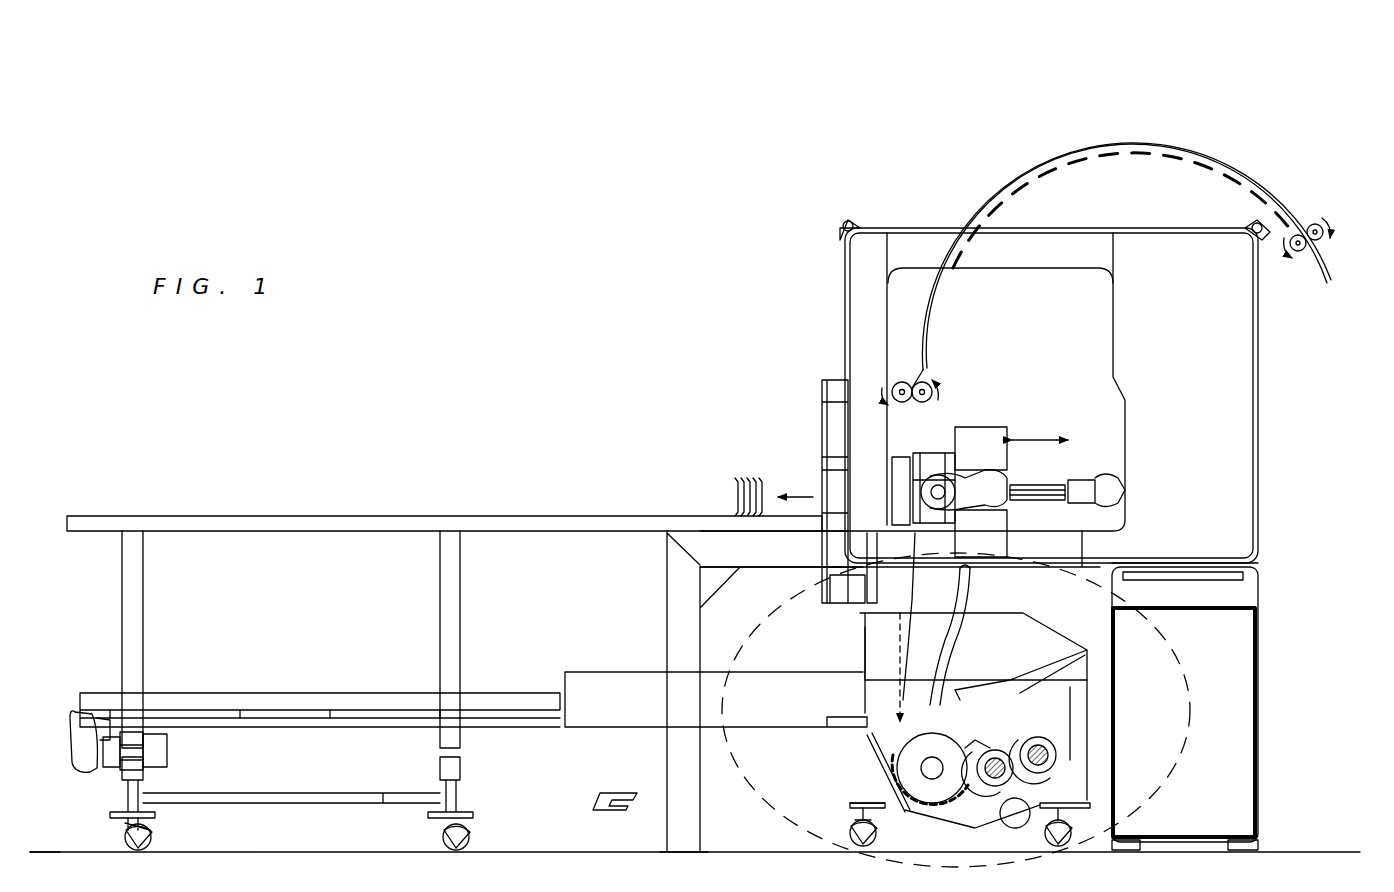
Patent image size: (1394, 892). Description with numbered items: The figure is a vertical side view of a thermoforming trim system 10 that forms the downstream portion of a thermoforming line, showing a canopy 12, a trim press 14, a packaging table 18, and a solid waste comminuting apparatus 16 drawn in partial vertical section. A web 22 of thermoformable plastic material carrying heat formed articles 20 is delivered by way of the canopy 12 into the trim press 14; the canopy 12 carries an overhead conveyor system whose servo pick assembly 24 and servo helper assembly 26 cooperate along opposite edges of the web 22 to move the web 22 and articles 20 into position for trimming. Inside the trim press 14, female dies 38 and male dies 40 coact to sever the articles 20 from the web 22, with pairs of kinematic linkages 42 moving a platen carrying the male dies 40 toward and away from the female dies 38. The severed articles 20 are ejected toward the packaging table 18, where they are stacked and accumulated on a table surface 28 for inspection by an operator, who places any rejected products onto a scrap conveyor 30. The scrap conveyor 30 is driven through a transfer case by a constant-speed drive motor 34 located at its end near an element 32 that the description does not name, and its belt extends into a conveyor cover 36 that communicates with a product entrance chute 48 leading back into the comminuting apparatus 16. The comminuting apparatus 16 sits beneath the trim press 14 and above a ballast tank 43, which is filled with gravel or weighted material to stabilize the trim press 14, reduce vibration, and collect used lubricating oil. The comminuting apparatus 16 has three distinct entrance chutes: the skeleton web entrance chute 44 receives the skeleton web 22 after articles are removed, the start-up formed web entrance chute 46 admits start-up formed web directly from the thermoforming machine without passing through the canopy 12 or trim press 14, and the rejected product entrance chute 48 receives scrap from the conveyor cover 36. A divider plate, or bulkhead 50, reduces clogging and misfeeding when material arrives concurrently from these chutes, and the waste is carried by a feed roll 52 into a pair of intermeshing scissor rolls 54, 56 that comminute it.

The thermoforming trim system 10 is at (588, 172).
The canopy 12 is at (1112, 90).
The trim press 14 is at (1274, 413).
The comminuting apparatus 16 is at (1162, 797).
The packaging table 18 is at (220, 466).
The articles 20 is at (737, 496).
The web 22 is at (1082, 140).
The servo pick assembly 24 is at (872, 380).
The servo helper assembly 26 is at (1316, 296).
The table surface 28 is at (400, 515).
The scrap conveyor 30 is at (308, 684).
The bumper 32 is at (84, 786).
The constant-speed drive motor 34 is at (174, 758).
The conveyor cover 36 is at (617, 672).
The female dies 38 is at (903, 458).
The male dies 40 is at (922, 470).
The kinematic linkages 42 is at (1042, 476).
The ballast tank 43 is at (1262, 717).
The skeleton web entrance chute 44 is at (928, 602).
The start-up formed web entrance chute 46 is at (1040, 611).
The product entrance chute 48 is at (878, 695).
The bulkhead 50 is at (952, 662).
The feed roll 52 is at (892, 736).
The scissor roll 54 is at (985, 826).
The scissor roll 56 is at (1030, 725).